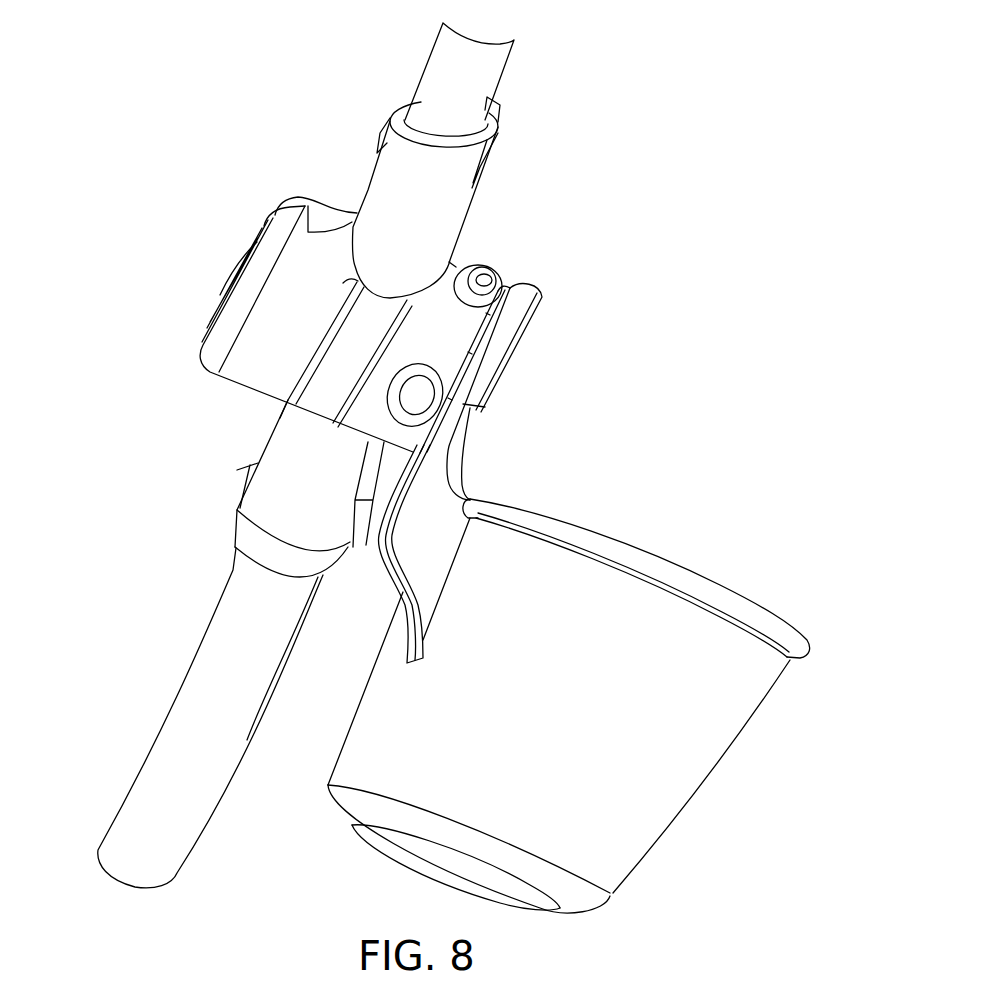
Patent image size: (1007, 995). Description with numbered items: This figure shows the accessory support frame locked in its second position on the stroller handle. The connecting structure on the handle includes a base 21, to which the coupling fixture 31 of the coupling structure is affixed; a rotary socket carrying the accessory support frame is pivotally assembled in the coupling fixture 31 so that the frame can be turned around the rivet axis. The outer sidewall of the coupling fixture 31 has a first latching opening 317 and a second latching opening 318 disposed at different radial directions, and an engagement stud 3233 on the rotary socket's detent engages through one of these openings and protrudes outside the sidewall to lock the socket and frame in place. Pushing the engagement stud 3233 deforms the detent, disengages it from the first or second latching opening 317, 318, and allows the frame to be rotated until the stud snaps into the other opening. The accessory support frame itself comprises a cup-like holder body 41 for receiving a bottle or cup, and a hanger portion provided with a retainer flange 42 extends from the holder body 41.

The base 21 is at (285, 323).
The coupling fixture 31 is at (447, 353).
The first latching opening 317 is at (412, 398).
The second latching opening 318 is at (510, 287).
The engagement stud 3233 is at (485, 275).
The holder body 41 is at (630, 762).
The retainer flange 42 is at (490, 347).